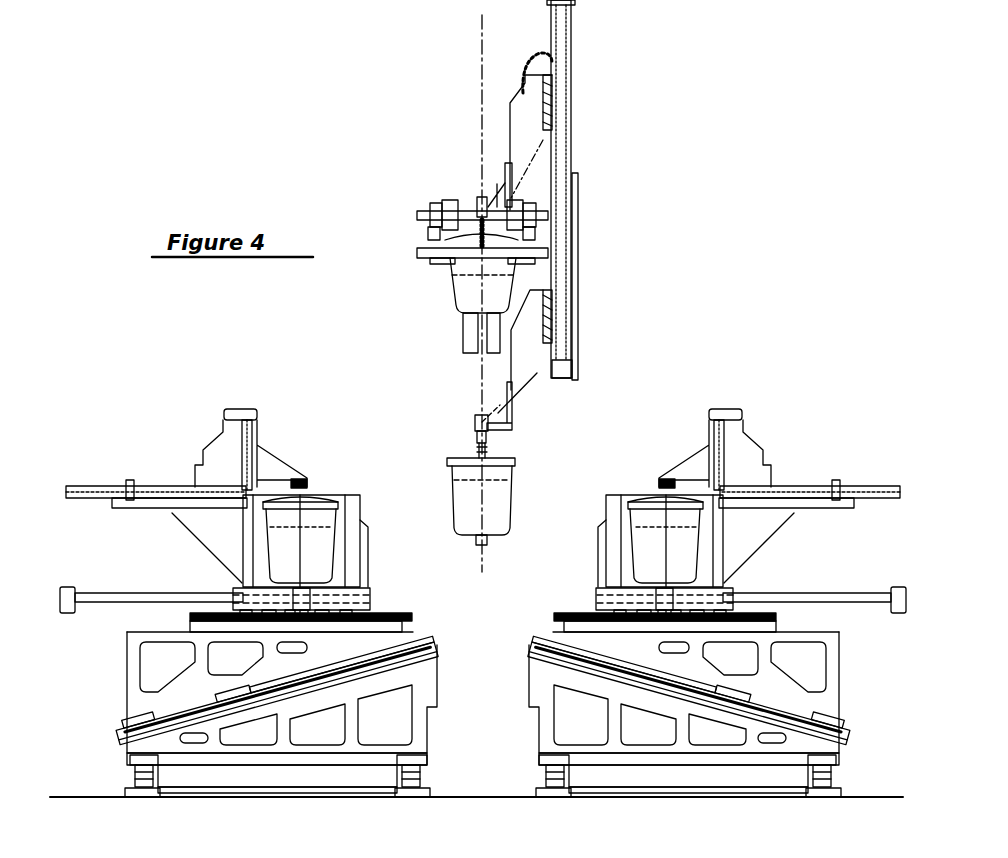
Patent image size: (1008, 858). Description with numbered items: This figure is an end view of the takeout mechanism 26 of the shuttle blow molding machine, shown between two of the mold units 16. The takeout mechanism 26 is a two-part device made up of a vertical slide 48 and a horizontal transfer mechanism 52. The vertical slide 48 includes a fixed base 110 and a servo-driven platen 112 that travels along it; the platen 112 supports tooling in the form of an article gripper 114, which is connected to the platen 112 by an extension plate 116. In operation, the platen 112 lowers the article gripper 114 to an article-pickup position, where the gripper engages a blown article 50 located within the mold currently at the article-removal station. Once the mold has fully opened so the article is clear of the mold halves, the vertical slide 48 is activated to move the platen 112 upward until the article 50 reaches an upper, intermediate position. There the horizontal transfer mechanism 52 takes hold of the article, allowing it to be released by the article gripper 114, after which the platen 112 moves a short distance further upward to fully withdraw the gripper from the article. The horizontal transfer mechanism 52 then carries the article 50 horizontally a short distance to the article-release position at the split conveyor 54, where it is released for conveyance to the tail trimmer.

The mold units 16 is at (100, 688).
The takeout mechanism 26 is at (509, 272).
The vertical slide 48 is at (578, 40).
The blown article 50 is at (518, 500).
The horizontal transfer mechanism 52 is at (407, 265).
The split conveyor 54 is at (468, 340).
The fixed base 110 is at (576, 120).
The servo-driven platen 112 is at (546, 316).
The article gripper 114 is at (475, 425).
The extension plate 116 is at (520, 389).